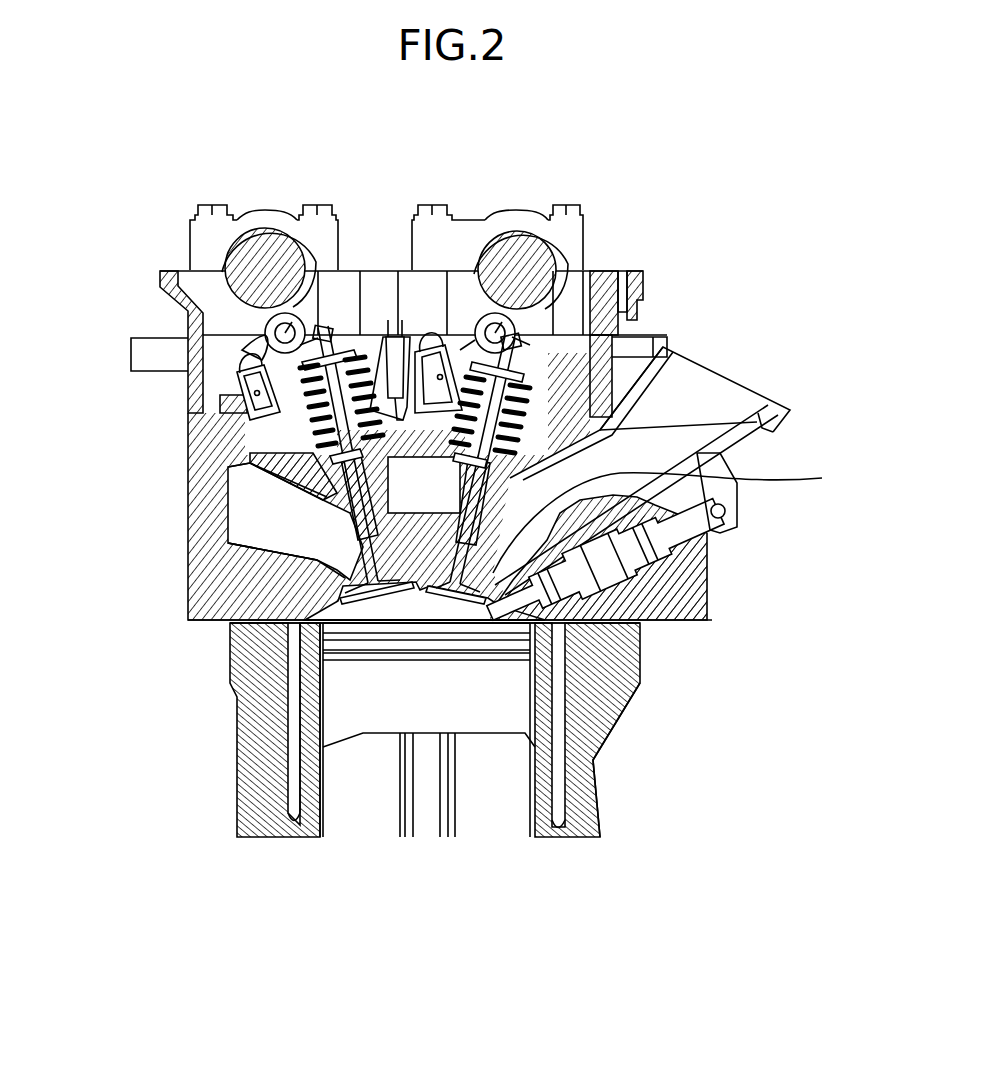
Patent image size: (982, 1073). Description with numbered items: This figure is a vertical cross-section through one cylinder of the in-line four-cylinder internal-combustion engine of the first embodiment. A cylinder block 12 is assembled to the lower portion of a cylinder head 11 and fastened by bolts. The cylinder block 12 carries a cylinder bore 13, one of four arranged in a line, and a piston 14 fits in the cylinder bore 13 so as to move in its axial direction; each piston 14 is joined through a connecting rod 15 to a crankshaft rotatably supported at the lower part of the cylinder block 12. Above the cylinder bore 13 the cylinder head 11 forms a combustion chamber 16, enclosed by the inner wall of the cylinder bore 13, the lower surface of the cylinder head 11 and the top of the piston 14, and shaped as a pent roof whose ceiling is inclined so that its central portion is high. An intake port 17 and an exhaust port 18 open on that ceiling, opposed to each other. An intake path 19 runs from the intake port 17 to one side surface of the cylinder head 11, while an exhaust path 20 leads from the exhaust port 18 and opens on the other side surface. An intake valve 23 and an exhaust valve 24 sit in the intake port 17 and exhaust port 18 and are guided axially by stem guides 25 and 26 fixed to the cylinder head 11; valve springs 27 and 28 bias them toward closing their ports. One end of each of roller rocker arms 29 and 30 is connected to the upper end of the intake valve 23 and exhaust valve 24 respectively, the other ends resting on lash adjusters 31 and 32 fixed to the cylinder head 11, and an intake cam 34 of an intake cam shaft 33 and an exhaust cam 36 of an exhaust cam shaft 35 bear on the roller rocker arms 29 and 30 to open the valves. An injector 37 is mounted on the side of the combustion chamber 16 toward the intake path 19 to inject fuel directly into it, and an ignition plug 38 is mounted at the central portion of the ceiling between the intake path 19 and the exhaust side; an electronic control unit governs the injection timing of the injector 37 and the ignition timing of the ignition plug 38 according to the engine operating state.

The cylinder head 11 is at (690, 590).
The cylinder block 12 is at (623, 683).
The cylinder bore 13 is at (318, 797).
The piston 14 is at (473, 720).
The connecting rod 15 is at (427, 823).
The combustion chamber 16 is at (390, 612).
The intake port 17 is at (430, 610).
The exhaust port 18 is at (305, 570).
The intake path 19 is at (720, 385).
The exhaust path 20 is at (247, 530).
The intake valve 23 is at (552, 360).
The exhaust valve 24 is at (247, 428).
The stem guide 25 is at (663, 543).
The stem guide 26 is at (293, 508).
The valve spring 27 is at (578, 395).
The valve spring 28 is at (225, 338).
The roller rocker arm 29 is at (566, 335).
The roller rocker arm 30 is at (223, 273).
The lash adjuster 31 is at (400, 395).
The lash adjuster 32 is at (227, 405).
The intake cam shaft 33 is at (522, 250).
The intake cam 34 is at (485, 232).
The exhaust cam shaft 35 is at (258, 252).
The exhaust cam 36 is at (290, 237).
The injector 37 is at (645, 622).
The ignition plug 38 is at (620, 703).